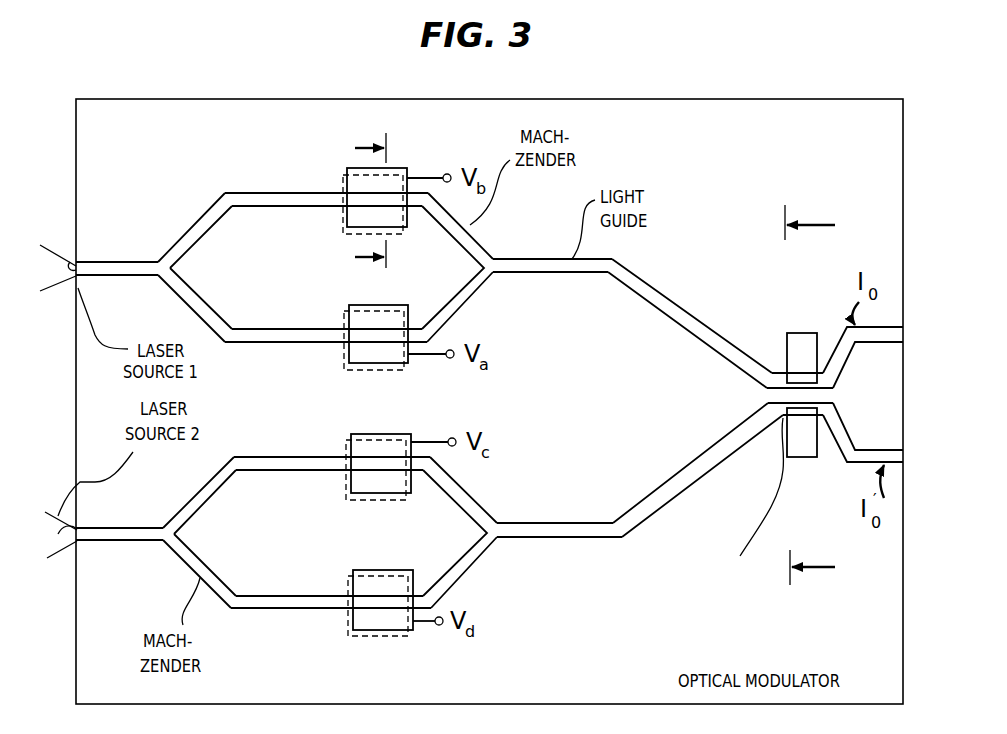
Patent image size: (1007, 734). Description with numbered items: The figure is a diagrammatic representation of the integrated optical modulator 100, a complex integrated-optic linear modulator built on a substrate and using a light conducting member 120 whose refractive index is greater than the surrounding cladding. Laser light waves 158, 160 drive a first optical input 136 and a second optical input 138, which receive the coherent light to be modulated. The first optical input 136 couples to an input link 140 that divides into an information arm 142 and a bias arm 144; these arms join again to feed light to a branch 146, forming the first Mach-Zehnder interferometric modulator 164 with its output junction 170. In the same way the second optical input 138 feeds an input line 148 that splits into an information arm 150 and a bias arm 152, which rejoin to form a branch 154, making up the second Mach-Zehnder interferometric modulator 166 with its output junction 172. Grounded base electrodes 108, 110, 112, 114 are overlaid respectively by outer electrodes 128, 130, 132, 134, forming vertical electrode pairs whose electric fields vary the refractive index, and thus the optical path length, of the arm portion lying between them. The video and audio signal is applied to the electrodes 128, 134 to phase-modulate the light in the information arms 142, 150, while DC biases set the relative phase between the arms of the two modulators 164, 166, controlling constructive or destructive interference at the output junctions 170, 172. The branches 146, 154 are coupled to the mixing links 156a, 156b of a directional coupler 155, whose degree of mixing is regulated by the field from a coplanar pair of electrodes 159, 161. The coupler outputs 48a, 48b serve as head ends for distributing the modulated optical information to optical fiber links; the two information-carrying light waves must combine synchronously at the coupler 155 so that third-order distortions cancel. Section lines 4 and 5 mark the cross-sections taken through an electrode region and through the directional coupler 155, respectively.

The complex modulator 100 is at (541, 83).
The base electrode 108 is at (347, 234).
The base electrode 110 is at (372, 371).
The base electrode 112 is at (352, 500).
The base electrode 114 is at (355, 633).
The light conducting member 120 is at (471, 236).
The outer electrode 128 is at (352, 168).
The outer electrode 130 is at (355, 305).
The outer electrode 132 is at (388, 500).
The outer electrode 134 is at (390, 631).
The first optical input 136 is at (76, 262).
The second optical input 138 is at (78, 560).
The input link 140 is at (115, 277).
The information arm 142 is at (200, 219).
The bias arm 144 is at (223, 319).
The branch 146 is at (642, 280).
The input line 148 is at (113, 527).
The information arm 150 is at (455, 585).
The bias arm 152 is at (305, 457).
The branch 154 is at (630, 533).
The directional coupler 155 is at (739, 435).
The mixing link 156a is at (778, 373).
The mixing link 156b is at (782, 417).
The laser light wave 158 is at (76, 262).
The laser light wave 160 is at (77, 553).
The electrode 159 is at (800, 333).
The electrode 161 is at (803, 458).
The Mach-Zehnder interferometric modulator 164 is at (390, 351).
The Mach-Zehnder interferometric modulator 166 is at (388, 516).
The output junction 170 is at (495, 273).
The output junction 172 is at (494, 542).
The output 48a is at (872, 343).
The output 48b is at (872, 450).
The section line 4- 4 is at (370, 203).
The section line 5- 5 is at (810, 387).